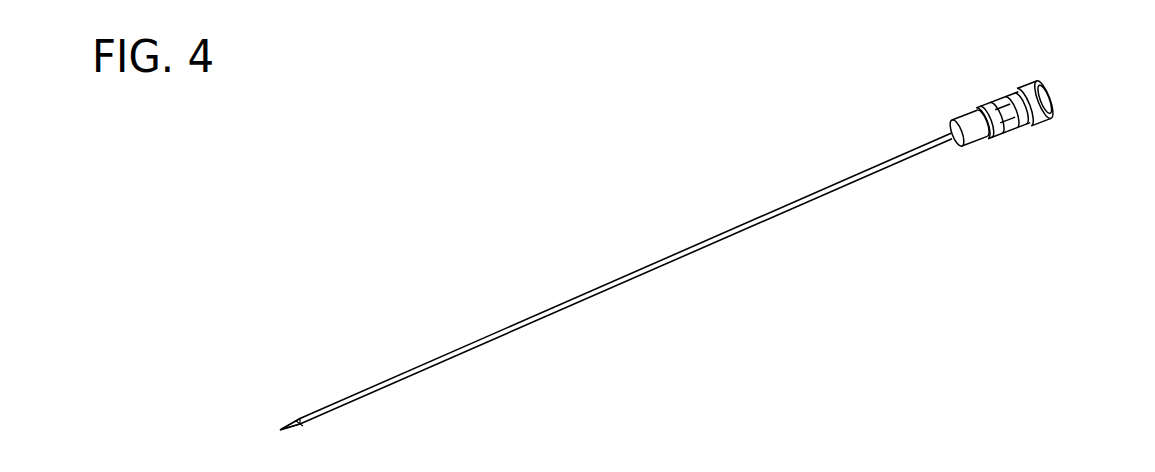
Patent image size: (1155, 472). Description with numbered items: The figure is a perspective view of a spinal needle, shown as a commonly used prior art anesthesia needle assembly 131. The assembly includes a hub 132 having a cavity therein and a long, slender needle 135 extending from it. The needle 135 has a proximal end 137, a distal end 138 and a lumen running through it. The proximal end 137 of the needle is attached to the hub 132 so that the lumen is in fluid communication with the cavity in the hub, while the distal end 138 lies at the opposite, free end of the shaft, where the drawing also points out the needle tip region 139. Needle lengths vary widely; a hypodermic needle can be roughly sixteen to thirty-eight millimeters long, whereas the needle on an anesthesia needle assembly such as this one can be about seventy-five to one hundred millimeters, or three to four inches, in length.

The anesthesia needle assembly 131 is at (1013, 130).
The hub 132 is at (1013, 92).
The needle 135 is at (673, 263).
The proximal end 137 is at (945, 136).
The distal end 138 is at (312, 415).
The needle tip 139 is at (282, 430).